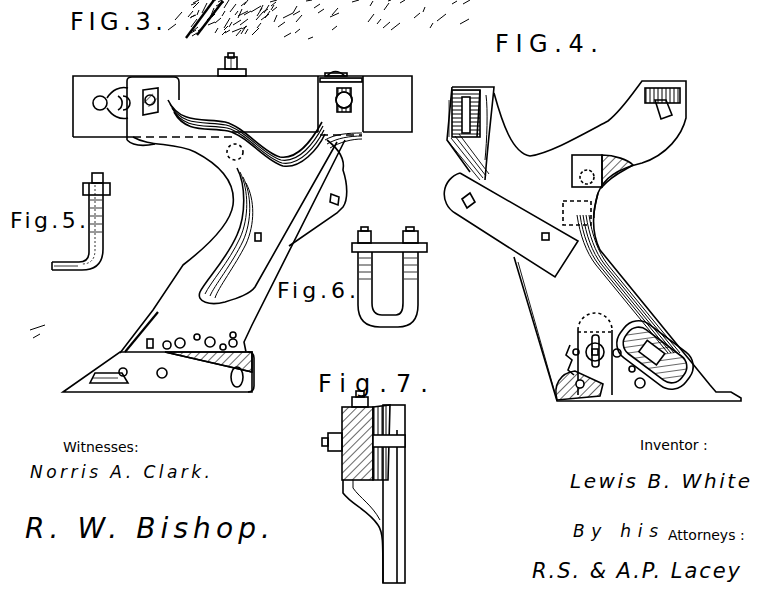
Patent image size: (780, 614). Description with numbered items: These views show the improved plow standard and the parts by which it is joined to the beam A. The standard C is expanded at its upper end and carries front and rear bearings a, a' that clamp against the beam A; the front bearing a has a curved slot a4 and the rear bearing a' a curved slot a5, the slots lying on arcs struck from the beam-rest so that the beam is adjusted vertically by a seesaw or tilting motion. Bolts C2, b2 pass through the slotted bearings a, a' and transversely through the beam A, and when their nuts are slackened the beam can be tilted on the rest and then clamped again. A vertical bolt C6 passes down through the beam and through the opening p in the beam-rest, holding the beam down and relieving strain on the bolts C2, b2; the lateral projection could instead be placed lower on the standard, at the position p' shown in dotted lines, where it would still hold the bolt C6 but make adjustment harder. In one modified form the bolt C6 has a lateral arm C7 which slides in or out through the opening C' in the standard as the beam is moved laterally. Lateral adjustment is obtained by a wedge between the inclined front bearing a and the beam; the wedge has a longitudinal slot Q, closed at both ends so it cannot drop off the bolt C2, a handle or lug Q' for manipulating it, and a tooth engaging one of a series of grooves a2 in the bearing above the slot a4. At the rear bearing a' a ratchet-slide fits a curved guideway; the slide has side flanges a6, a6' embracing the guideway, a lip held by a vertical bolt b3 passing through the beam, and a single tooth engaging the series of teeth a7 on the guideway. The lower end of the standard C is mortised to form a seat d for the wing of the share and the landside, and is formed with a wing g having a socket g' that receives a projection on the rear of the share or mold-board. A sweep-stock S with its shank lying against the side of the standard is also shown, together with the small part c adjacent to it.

In FIG. 3, the frame bar A is at (242, 112).
In FIG. 3, the standard / leg C is at (233, 226).
In FIG. 4, the standard / leg C is at (592, 287).
In FIG. 3, the opening in the standard C' is at (245, 156).
In FIG. 3, the bolt C2 is at (148, 92).
In FIG. 3, the vertical bolt C6 is at (238, 63).
In FIG. 5, the vertical bolt C6 is at (104, 223).
In FIG. 5, the lateral arm of the bolt C7 is at (66, 278).
In FIG. 3, the longitudinal slot of the wedge Q is at (82, 130).
In FIG. 3, the handle or lug of the wedge Q' is at (83, 112).
In FIG. 3, the socket g' is at (120, 129).
In FIG. 4, the socket g' is at (658, 355).
In FIG. 4, the wing g is at (611, 398).
In FIG. 3, the bolt b2 is at (349, 96).
In FIG. 3, the vertical bolt b3 is at (336, 57).
In FIG. 3, the front bearing a is at (247, 130).
In FIG. 4, the front bearing a is at (566, 149).
In FIG. 3, the rear bearing a' is at (344, 109).
In FIG. 4, the rear bearing a' is at (503, 127).
In FIG. 4, the grooves a2 is at (460, 157).
In FIG. 4, the curved slot of the front bearing a4 is at (672, 110).
In FIG. 4, the curved slot of the rear bearing a5 is at (470, 90).
In FIG. 4, the side flanges of the slide a6 is at (492, 109).
In FIG. 4, the slot edge a6' is at (436, 118).
In FIG. 4, the teeth of the guideway a7 is at (490, 133).
In FIG. 3, the seat d is at (190, 382).
In FIG. 4, the opening in the beam-rest p is at (622, 170).
In FIG. 4, the alternative position of the lateral projection p' is at (591, 213).
In FIG. 4, the sweep-stock S is at (607, 400).
In FIG. 4, the spring catch c is at (586, 350).